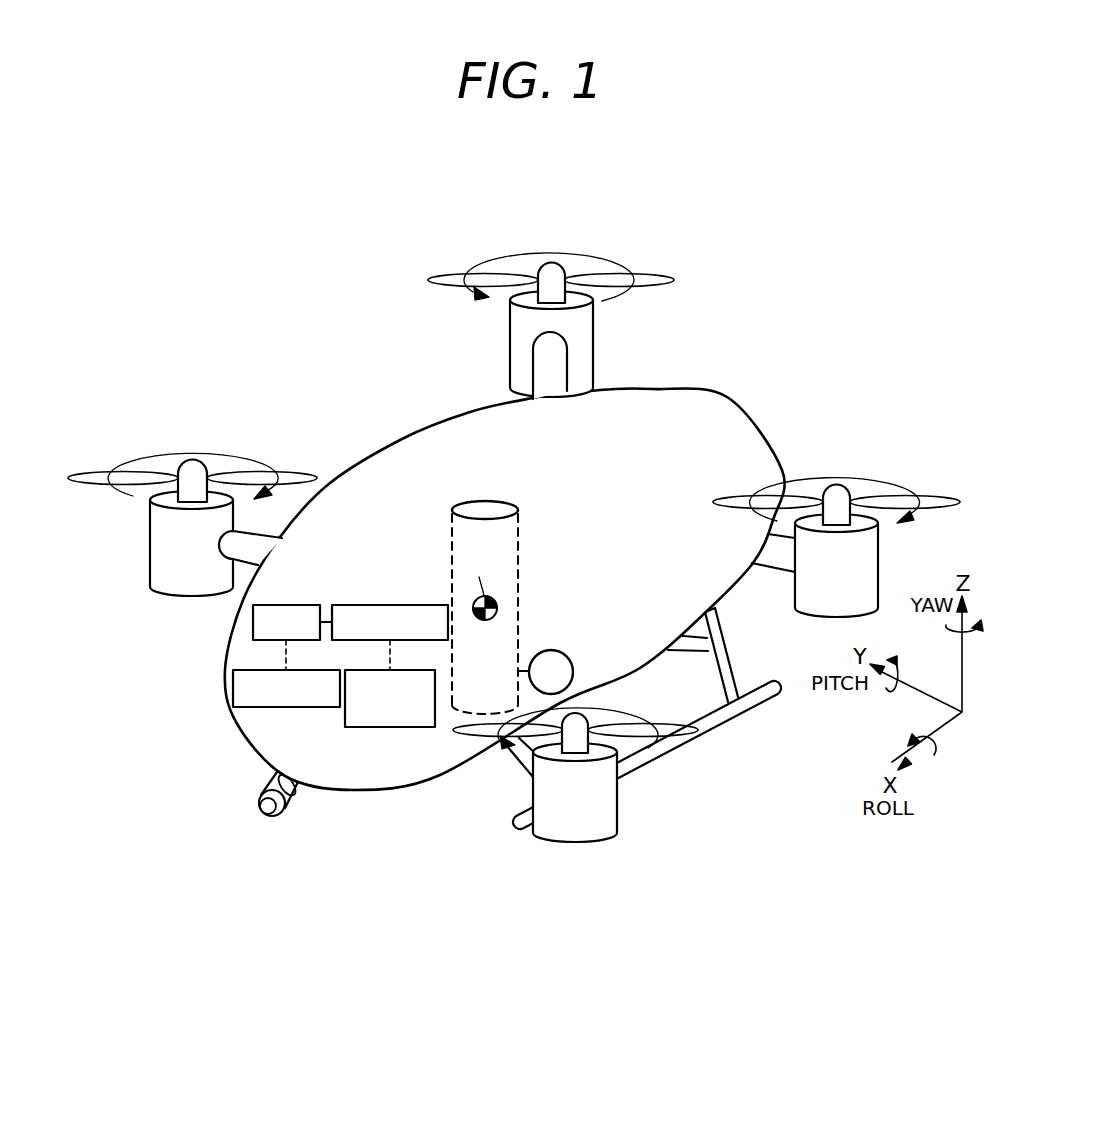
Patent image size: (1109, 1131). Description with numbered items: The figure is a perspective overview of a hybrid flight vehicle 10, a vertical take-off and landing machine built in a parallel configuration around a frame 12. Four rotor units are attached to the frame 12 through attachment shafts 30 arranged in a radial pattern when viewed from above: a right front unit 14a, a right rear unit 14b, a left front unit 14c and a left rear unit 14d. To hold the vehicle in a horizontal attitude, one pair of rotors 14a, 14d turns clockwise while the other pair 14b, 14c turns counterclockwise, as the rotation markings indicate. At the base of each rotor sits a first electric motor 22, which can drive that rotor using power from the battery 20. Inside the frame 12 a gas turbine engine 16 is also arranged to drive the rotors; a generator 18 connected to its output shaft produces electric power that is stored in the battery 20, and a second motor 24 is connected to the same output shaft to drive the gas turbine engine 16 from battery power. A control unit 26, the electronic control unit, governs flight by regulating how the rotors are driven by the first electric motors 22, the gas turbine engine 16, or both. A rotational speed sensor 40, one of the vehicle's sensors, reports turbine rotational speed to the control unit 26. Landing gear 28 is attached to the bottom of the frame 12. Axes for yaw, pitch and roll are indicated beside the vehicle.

The hybrid flight vehicle 10 is at (821, 310).
The frame 12 is at (726, 398).
The right front rotor unit 14a is at (301, 474).
The right rear rotor unit 14b is at (612, 302).
The left front rotor unit 14c is at (684, 740).
The left rear rotor unit 14d is at (950, 500).
The gas turbine engine 16 is at (518, 565).
The generator 18 is at (382, 728).
The battery 20 is at (386, 605).
The first electric motor 22 is at (508, 347).
The second motor 24 is at (553, 650).
The control unit 26 is at (312, 605).
The landing gear 28 is at (747, 712).
The attachment shaft 30 is at (530, 400).
The rotational speed sensor 40 is at (284, 708).